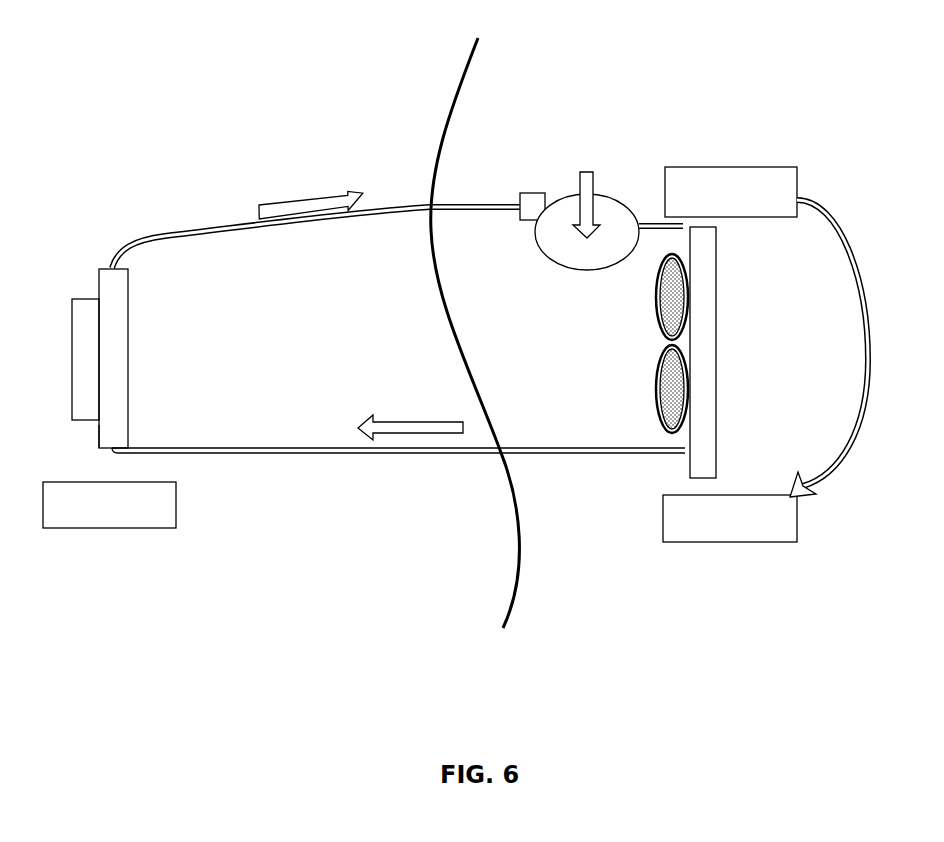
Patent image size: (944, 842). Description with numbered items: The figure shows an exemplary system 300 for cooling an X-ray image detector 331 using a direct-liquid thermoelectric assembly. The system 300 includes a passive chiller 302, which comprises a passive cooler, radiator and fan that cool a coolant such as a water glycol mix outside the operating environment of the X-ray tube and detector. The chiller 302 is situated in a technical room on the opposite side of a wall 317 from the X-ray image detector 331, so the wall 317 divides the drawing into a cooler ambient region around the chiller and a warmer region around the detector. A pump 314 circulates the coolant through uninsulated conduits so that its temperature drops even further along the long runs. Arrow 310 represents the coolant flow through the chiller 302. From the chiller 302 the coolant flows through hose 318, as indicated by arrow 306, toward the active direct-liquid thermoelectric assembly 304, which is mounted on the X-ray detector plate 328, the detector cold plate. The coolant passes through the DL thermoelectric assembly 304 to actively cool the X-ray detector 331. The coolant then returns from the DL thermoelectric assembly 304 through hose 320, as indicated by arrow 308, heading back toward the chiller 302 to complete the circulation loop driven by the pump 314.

The system 300 is at (128, 44).
The passive chiller 302 is at (657, 392).
The direct-liquid thermoelectric assembly 304 is at (72, 313).
The arrow 306 is at (403, 418).
The arrow 308 is at (302, 192).
The arrow 310 is at (853, 278).
The pump 314 is at (620, 196).
The wall 317 is at (522, 590).
The hose 318 is at (550, 455).
The hose 320 is at (460, 204).
The X-ray detector plate 328 is at (98, 430).
The X-ray image detector 331 is at (128, 360).